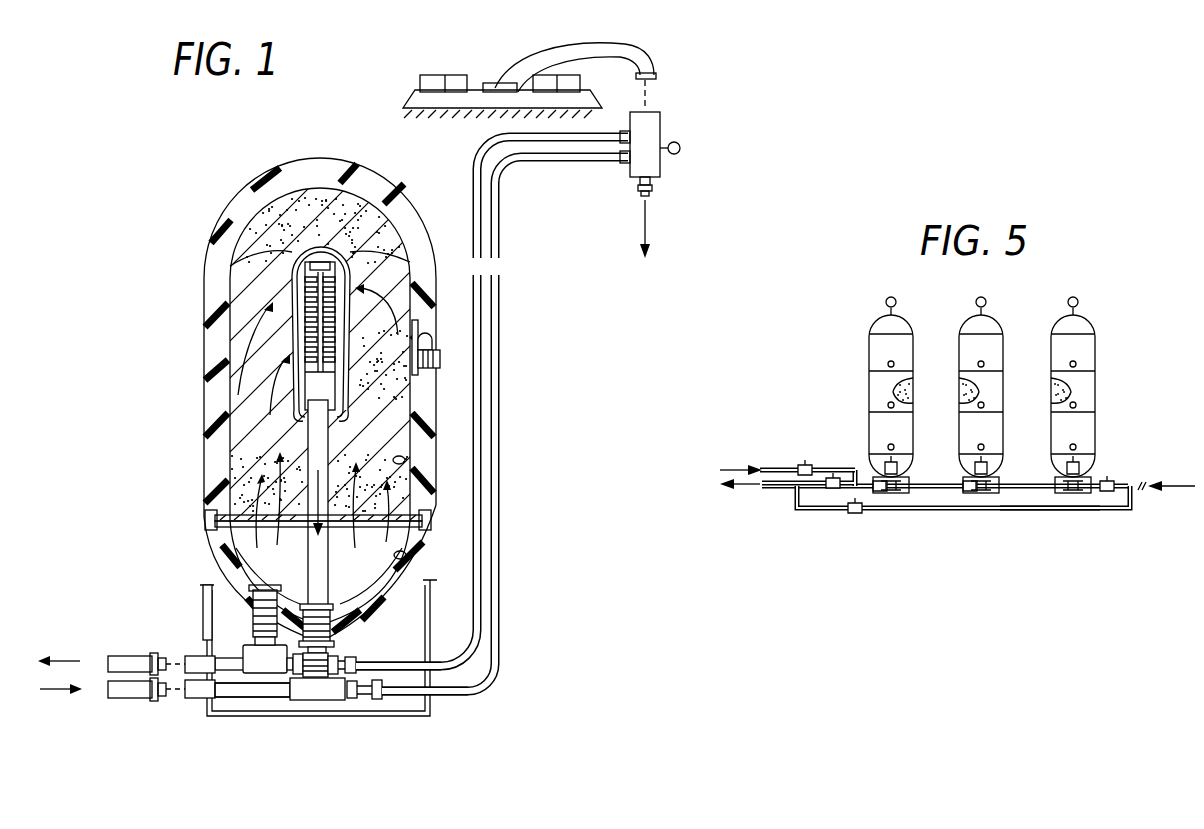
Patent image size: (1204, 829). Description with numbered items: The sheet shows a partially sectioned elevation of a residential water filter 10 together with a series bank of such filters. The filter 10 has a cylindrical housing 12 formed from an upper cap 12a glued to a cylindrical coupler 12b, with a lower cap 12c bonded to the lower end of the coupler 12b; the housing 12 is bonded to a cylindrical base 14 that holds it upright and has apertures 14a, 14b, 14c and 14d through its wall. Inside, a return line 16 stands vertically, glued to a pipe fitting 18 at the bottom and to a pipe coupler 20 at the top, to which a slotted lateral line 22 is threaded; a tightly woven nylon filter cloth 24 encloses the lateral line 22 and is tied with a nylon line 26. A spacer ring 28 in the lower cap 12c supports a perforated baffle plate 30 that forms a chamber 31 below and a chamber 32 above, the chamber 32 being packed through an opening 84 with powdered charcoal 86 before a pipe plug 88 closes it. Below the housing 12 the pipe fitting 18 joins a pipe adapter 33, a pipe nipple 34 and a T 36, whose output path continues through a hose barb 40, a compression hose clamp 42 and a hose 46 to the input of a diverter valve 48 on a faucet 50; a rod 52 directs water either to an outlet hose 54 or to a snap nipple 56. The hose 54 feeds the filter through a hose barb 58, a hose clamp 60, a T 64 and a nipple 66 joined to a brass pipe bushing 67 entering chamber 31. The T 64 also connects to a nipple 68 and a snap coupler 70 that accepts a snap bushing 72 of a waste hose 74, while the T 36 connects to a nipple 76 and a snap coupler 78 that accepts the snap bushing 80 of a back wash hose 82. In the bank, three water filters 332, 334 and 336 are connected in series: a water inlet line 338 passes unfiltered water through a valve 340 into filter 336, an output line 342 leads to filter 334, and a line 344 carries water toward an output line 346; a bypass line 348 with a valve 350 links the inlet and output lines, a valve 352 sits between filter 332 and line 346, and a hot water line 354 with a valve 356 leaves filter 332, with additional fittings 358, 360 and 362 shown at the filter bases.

In FIG. 1, the water filter 10 is at (240, 142).
In FIG. 1, the cylindrical housing 12 is at (150, 306).
In FIG. 1, the upper cap 12a is at (220, 215).
In FIG. 1, the coupler 12b is at (425, 420).
In FIG. 1, the lower cap 12c is at (425, 560).
In FIG. 1, the cylindrical base 14 is at (437, 722).
In FIG. 1, the aperture 14a is at (222, 657).
In FIG. 1, the aperture 14b is at (205, 699).
In FIG. 1, the aperture 14c is at (462, 664).
In FIG. 1, the aperture 14d is at (446, 694).
In FIG. 1, the return line 16 is at (307, 455).
In FIG. 1, the pipe fitting 18 is at (330, 606).
In FIG. 1, the pipe coupler 20 is at (330, 430).
In FIG. 1, the lateral line 22 is at (345, 258).
In FIG. 1, the nylon filter cloth 24 is at (310, 250).
In FIG. 1, the nylon line 26 is at (348, 408).
In FIG. 1, the spacer ring 28 is at (222, 545).
In FIG. 1, the baffle plate 30 is at (235, 505).
In FIG. 1, the chamber 31 is at (406, 555).
In FIG. 1, the chamber 32 is at (406, 462).
In FIG. 1, the pipe adapter 33 is at (300, 674).
In FIG. 1, the pipe nipple 34 is at (316, 678).
In FIG. 1, the T 36 is at (320, 701).
In FIG. 1, the hose barb 40 is at (352, 700).
In FIG. 1, the compression hose clamp 42 is at (358, 660).
In FIG. 1, the hose 46 is at (500, 222).
In FIG. 1, the diverter valve 48 is at (637, 172).
In FIG. 1, the faucet 50 is at (672, 55).
In FIG. 1, the rod 52 is at (680, 144).
In FIG. 1, the outlet hose 54 is at (476, 178).
In FIG. 1, the snap nipple 56 is at (654, 188).
In FIG. 1, the hose barb 58 is at (340, 657).
In FIG. 1, the hose clamp 60 is at (382, 683).
In FIG. 1, the T 64 is at (266, 674).
In FIG. 1, the nipple 66 is at (298, 600).
In FIG. 1, the brass pipe bushing 67 is at (274, 590).
In FIG. 1, the nipple 68 is at (210, 625).
In FIG. 1, the snap coupler 70 is at (192, 656).
In FIG. 1, the snap bushing 72 is at (128, 656).
In FIG. 1, the waste hose 74 is at (105, 658).
In FIG. 1, the nipple 76 is at (240, 698).
In FIG. 1, the snap coupler 78 is at (198, 700).
In FIG. 1, the snap bushing 80 is at (140, 700).
In FIG. 1, the back wash hose 82 is at (112, 692).
In FIG. 1, the opening 84 is at (420, 332).
In FIG. 1, the powdered charcoal 86 is at (432, 340).
In FIG. 1, the pipe plug 88 is at (440, 358).
In FIG. 5, the water filter 332 is at (900, 322).
In FIG. 5, the water filter 334 is at (995, 322).
In FIG. 5, the water filter 336 is at (1088, 322).
In FIG. 5, the water inlet line 338 is at (1150, 484).
In FIG. 5, the valve 340 is at (1109, 478).
In FIG. 5, the output line 342 is at (1040, 511).
In FIG. 5, the line 344 is at (925, 490).
In FIG. 5, the output line 346 is at (780, 488).
In FIG. 5, the bypass line 348 is at (1110, 511).
In FIG. 5, the valve 350 is at (860, 509).
In FIG. 5, the valve 352 is at (850, 509).
In FIG. 5, the hot water line 354 is at (800, 465).
In FIG. 5, the valve 356 is at (830, 477).
In FIG. 5, the tank drain valve 358 is at (888, 462).
In FIG. 5, the tank valve 360 is at (1000, 490).
In FIG. 5, the tank drain valve 362 is at (1076, 465).